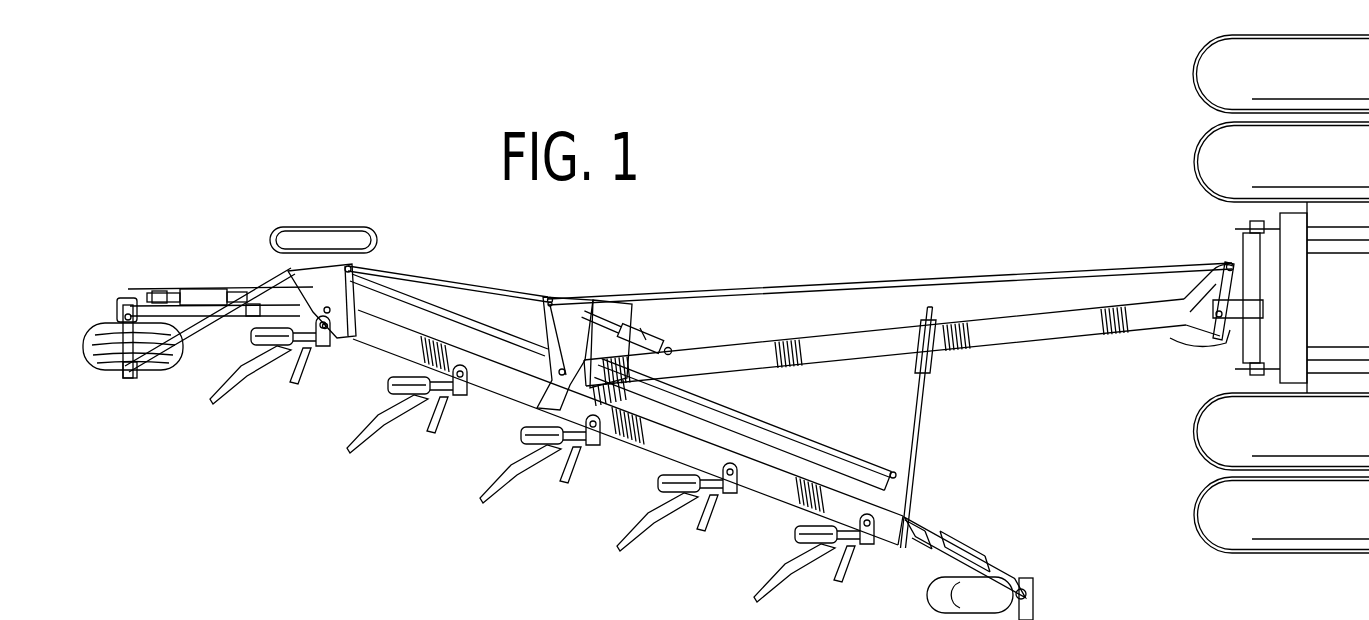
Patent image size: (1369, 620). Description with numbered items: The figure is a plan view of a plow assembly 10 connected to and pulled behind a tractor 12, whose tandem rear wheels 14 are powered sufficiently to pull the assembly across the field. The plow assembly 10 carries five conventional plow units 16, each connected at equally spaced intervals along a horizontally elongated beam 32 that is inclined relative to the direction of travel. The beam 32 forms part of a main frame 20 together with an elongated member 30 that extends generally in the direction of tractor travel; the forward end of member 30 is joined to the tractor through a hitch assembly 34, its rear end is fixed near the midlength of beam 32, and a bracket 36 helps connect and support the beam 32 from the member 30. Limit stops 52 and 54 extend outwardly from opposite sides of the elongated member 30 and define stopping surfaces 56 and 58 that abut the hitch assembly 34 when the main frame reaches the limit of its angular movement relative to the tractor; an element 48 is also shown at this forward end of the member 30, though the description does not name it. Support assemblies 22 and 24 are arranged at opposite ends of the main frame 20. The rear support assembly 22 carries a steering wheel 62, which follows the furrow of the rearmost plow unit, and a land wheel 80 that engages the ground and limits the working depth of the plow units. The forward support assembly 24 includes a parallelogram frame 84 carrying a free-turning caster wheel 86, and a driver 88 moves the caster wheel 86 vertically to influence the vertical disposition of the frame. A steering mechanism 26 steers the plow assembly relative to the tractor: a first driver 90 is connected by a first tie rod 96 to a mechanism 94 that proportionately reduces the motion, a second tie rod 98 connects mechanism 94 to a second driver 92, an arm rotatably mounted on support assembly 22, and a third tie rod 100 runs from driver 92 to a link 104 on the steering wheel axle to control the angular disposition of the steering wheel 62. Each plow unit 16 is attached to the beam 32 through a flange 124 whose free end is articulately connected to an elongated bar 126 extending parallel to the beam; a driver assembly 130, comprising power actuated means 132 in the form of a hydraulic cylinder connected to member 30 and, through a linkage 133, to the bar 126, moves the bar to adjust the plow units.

The plow assembly 10 is at (842, 214).
The tractor 12 is at (1228, 294).
The tandem rear wheels 14 is at (1213, 97).
The plow units 16 is at (231, 399).
The main frame 20 is at (628, 428).
The support assembly 22 is at (196, 338).
The support assembly 24 is at (946, 556).
The steering mechanism 26 is at (600, 296).
The elongated member 30 is at (998, 330).
The beam 32 is at (648, 440).
The hitch assembly 34 is at (1238, 246).
The bracket 36 is at (920, 455).
The fork 48 is at (1176, 331).
The limit stop 52 is at (1190, 346).
The limit stop 54 is at (1172, 298).
The stopping surface 56 is at (1219, 341).
The stopping surface 58 is at (1209, 268).
The steering wheel 62 is at (105, 368).
The land wheel 80 is at (366, 222).
The frame 84 is at (1042, 610).
The caster wheel 86 is at (936, 597).
The driver 88 is at (925, 566).
The first driver 90 is at (1228, 290).
The second driver 92 is at (353, 266).
The mechanism 94 is at (566, 292).
The first tie rod 96 is at (750, 297).
The second tie rod 98 is at (466, 293).
The third tie rod 100 is at (226, 320).
The link 104 is at (131, 379).
The flange 124 is at (665, 388).
The elongated bar 126 is at (833, 452).
The driver assembly 130 is at (657, 309).
The power actuated means 132 is at (641, 325).
The linkage 133 is at (668, 382).